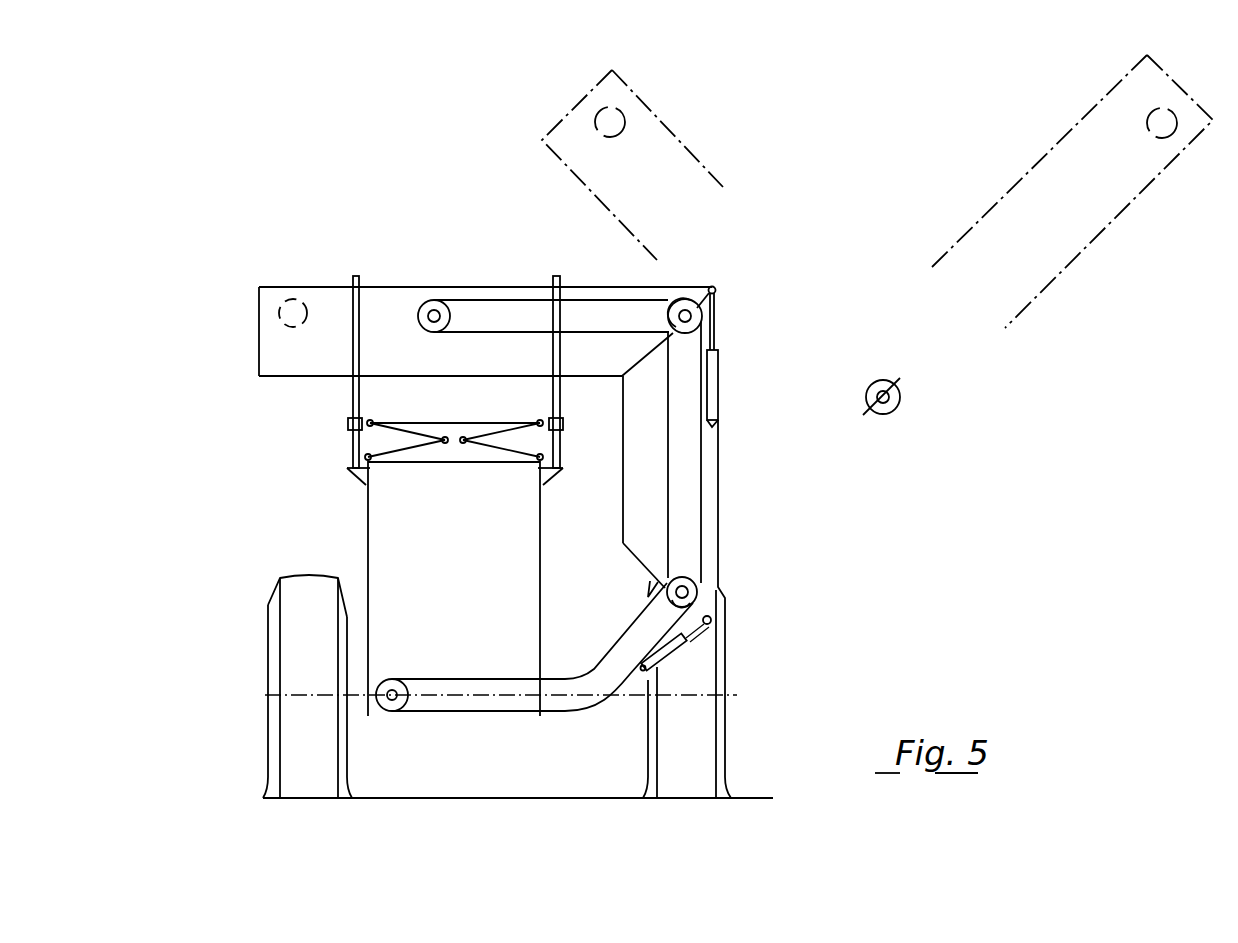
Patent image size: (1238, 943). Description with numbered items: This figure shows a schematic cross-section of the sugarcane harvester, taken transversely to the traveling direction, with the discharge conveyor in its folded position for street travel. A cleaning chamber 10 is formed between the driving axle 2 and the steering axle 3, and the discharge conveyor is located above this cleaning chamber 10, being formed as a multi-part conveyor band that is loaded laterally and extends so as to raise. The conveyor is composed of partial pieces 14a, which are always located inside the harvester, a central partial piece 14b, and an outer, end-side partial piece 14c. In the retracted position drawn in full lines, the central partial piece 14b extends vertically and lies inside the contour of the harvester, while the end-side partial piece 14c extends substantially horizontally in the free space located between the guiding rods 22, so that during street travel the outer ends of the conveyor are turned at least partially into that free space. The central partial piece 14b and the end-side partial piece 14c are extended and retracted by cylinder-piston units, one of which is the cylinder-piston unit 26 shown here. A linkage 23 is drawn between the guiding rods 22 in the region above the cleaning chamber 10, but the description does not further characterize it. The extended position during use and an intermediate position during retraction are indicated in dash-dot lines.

The driving axle 2 is at (665, 652).
The steering axle 3 is at (325, 693).
The cleaning chamber 10 is at (417, 535).
The partial pieces 14a is at (502, 708).
The central partial piece 14b is at (707, 495).
The outer partial piece 14c is at (461, 290).
The guiding rods 22 is at (355, 303).
The scissor linkage 23 is at (427, 420).
The cylinder-piston unit 26 is at (712, 395).